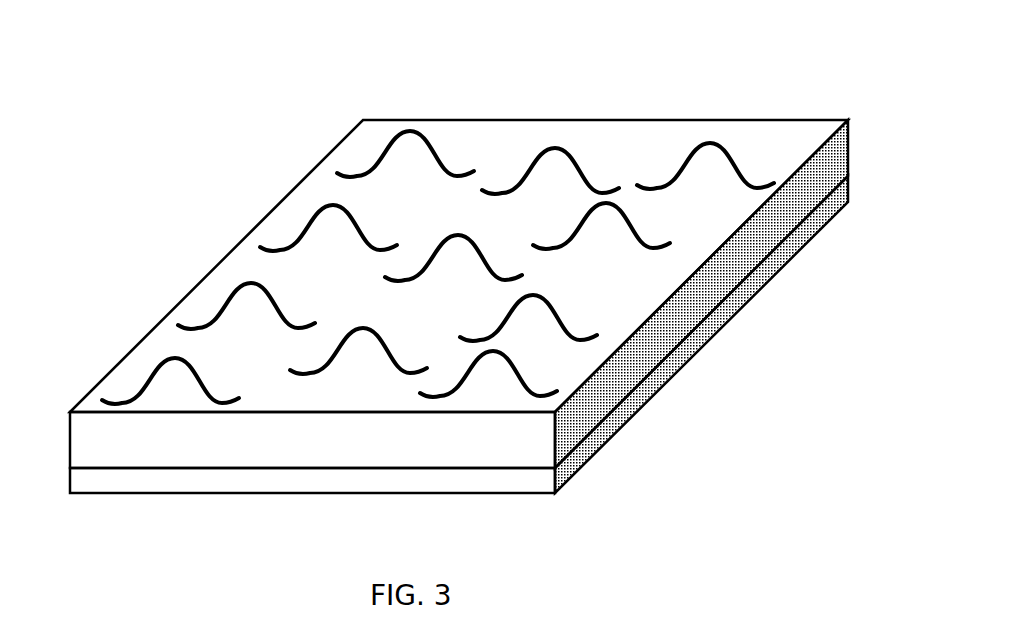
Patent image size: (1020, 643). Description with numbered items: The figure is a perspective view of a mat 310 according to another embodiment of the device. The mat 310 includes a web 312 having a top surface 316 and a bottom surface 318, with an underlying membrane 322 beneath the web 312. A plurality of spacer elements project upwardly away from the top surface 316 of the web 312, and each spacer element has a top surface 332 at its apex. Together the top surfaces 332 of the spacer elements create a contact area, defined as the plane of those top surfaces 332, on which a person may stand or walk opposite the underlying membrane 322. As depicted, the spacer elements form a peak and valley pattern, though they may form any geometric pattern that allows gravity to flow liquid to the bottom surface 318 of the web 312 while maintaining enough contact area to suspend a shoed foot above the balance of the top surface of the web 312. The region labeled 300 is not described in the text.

The optical structure with array of raised features 300 is at (337, 237).
The mat 310 is at (533, 96).
The web 312 is at (715, 275).
The top surface 316 is at (473, 148).
The bottom surface 318 is at (810, 217).
The membrane 322 is at (658, 373).
The top surface 332 is at (628, 127).